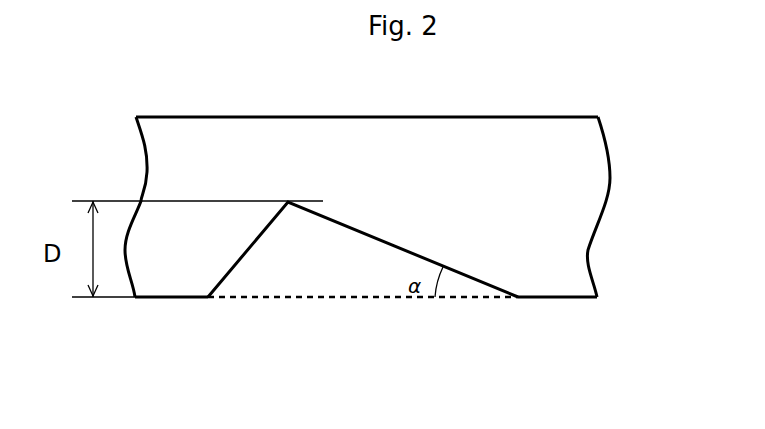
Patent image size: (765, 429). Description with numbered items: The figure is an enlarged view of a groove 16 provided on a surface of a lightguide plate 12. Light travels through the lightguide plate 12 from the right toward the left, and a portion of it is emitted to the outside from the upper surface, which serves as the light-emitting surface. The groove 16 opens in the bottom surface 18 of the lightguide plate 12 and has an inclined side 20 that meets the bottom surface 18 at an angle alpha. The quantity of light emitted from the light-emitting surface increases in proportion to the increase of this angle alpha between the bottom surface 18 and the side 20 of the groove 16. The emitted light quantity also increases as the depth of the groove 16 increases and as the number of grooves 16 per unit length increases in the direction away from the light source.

The lightguide plate 12 is at (513, 150).
The groove 16 is at (325, 262).
The side of the groove 20 is at (410, 257).
The bottom surface 18 is at (570, 298).